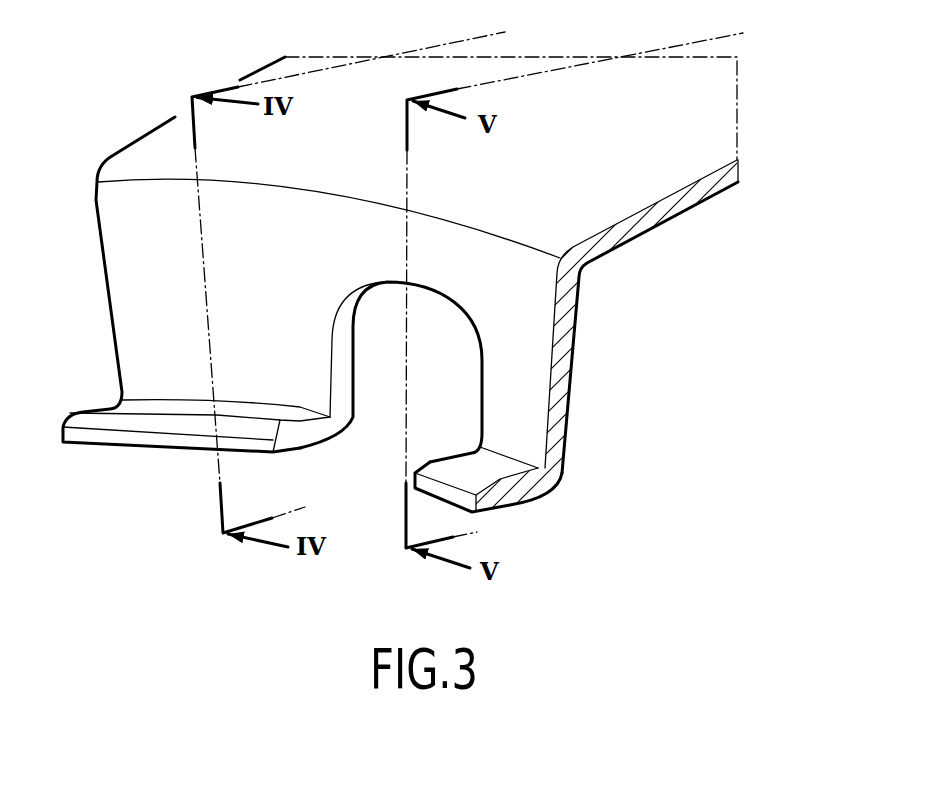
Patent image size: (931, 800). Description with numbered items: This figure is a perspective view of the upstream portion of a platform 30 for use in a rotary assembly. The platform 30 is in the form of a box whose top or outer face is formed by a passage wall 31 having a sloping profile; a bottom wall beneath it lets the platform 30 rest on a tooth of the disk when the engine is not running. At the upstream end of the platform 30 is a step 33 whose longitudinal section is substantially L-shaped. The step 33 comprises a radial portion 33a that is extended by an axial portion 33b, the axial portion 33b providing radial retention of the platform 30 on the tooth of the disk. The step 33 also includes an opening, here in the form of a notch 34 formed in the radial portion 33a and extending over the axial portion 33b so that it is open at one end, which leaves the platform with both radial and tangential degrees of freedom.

The platform 30 is at (492, 283).
The passage wall 31 is at (707, 126).
The step 33 is at (86, 349).
The radial portion 33a is at (560, 348).
The axial portion 33b is at (507, 490).
The notch 34 is at (393, 377).